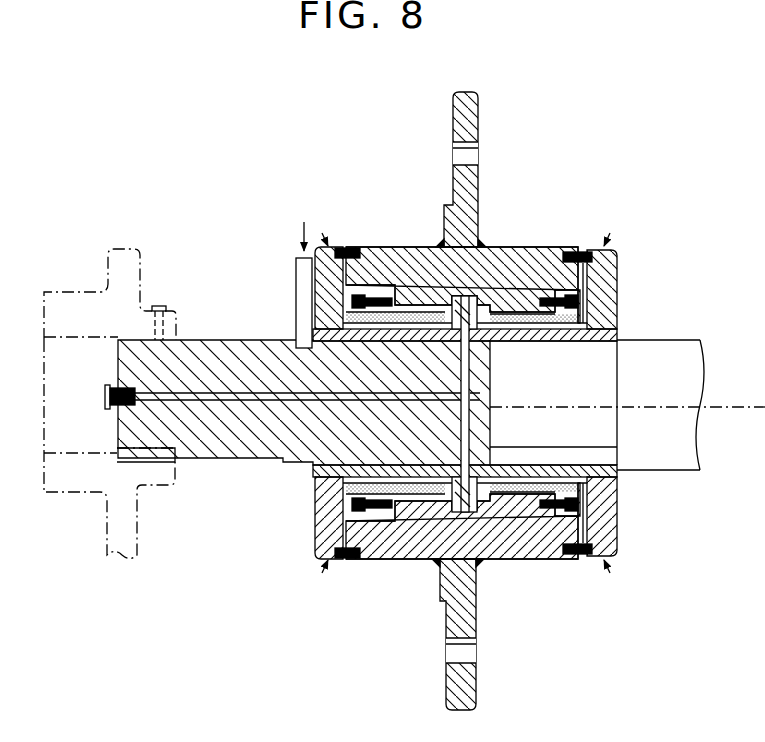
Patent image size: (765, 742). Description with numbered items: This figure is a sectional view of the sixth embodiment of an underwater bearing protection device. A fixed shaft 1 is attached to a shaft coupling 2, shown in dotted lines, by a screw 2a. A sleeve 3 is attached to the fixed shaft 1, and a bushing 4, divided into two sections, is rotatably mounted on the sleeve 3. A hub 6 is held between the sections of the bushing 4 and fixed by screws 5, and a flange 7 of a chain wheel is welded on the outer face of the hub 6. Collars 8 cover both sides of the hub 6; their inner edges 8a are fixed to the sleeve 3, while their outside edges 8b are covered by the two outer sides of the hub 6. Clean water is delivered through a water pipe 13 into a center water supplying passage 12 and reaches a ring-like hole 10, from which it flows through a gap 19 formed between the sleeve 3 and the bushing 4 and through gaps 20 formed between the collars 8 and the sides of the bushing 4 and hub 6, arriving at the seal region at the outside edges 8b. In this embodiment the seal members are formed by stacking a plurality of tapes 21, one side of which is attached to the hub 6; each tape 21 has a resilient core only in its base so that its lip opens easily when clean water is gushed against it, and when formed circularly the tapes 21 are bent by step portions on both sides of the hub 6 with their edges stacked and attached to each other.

The fixed shaft 1 is at (686, 352).
The shaft coupling 2 is at (77, 296).
The screw 2a is at (153, 306).
The sleeve 3 is at (601, 336).
The bushing 4 is at (565, 343).
The screws 5 is at (547, 250).
The hub 6 is at (497, 251).
The flange 7 is at (478, 106).
The collars 8 is at (630, 297).
The inner edges 8a is at (597, 331).
The outside edges 8b is at (614, 251).
The ring-like hole 10 is at (496, 333).
The center water supplying passage 12 is at (210, 401).
The water pipe 13 is at (297, 288).
The gap 19 is at (547, 343).
The gaps 20 is at (620, 282).
The tapes 21 is at (340, 247).